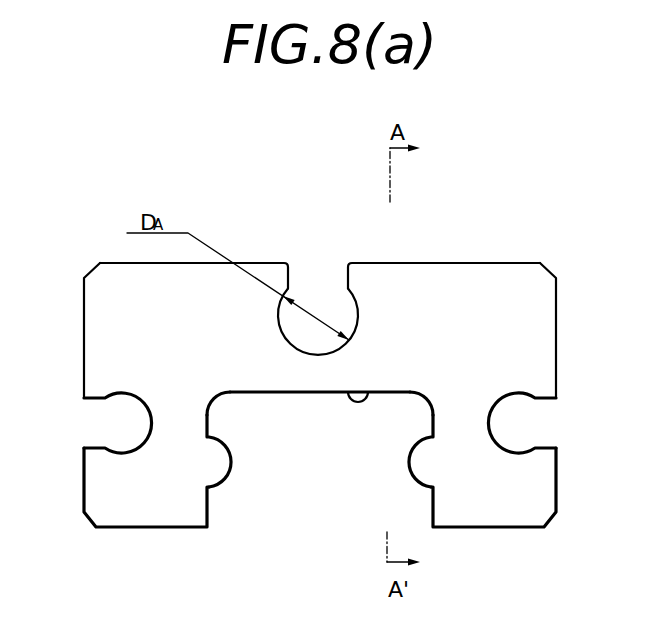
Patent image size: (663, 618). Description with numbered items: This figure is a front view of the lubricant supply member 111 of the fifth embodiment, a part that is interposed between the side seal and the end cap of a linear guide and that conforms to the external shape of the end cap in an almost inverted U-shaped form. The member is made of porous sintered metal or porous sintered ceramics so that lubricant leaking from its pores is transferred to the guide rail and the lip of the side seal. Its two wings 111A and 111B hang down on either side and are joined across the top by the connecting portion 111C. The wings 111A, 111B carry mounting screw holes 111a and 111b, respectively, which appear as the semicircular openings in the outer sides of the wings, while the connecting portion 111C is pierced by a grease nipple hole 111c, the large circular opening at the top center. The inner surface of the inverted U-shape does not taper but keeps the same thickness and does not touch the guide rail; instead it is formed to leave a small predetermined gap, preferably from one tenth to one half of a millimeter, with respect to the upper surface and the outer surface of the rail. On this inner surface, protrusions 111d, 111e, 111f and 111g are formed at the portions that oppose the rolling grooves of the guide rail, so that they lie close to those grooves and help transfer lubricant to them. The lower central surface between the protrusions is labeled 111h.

The lubricant supply member 111 is at (508, 252).
The connecting portion 111C is at (138, 272).
The grease nipple hole 111c is at (318, 338).
The lower center surface 111h is at (369, 391).
The protrusion 111g is at (222, 398).
The protrusion 111f is at (421, 398).
The protrusion 111e is at (221, 470).
The protrusion 111d is at (418, 470).
The mounting screw hole 111b is at (125, 451).
The mounting screw hole 111a is at (519, 450).
The wing 111B is at (107, 478).
The wing 111A is at (540, 484).